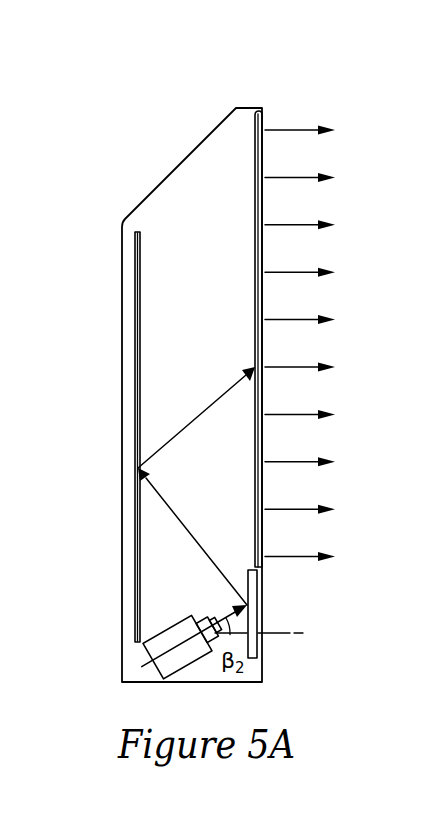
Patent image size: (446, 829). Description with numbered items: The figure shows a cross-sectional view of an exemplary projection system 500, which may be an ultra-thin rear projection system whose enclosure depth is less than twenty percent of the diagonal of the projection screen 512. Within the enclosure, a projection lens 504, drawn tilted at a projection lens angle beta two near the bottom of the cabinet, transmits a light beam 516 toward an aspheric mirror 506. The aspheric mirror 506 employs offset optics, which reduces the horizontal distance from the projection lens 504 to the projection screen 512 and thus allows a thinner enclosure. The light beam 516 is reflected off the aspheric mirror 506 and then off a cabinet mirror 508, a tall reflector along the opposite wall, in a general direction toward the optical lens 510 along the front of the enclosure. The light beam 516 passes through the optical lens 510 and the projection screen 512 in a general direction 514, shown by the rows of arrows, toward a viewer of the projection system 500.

The projection system 500 is at (154, 100).
The projection lens 504 is at (188, 665).
The aspheric mirror 506 is at (257, 608).
The cabinet mirror 508 is at (135, 263).
The optical lens 510 is at (262, 108).
The projection screen 512 is at (265, 247).
The general direction 514 is at (324, 174).
The light beam 516 is at (175, 435).